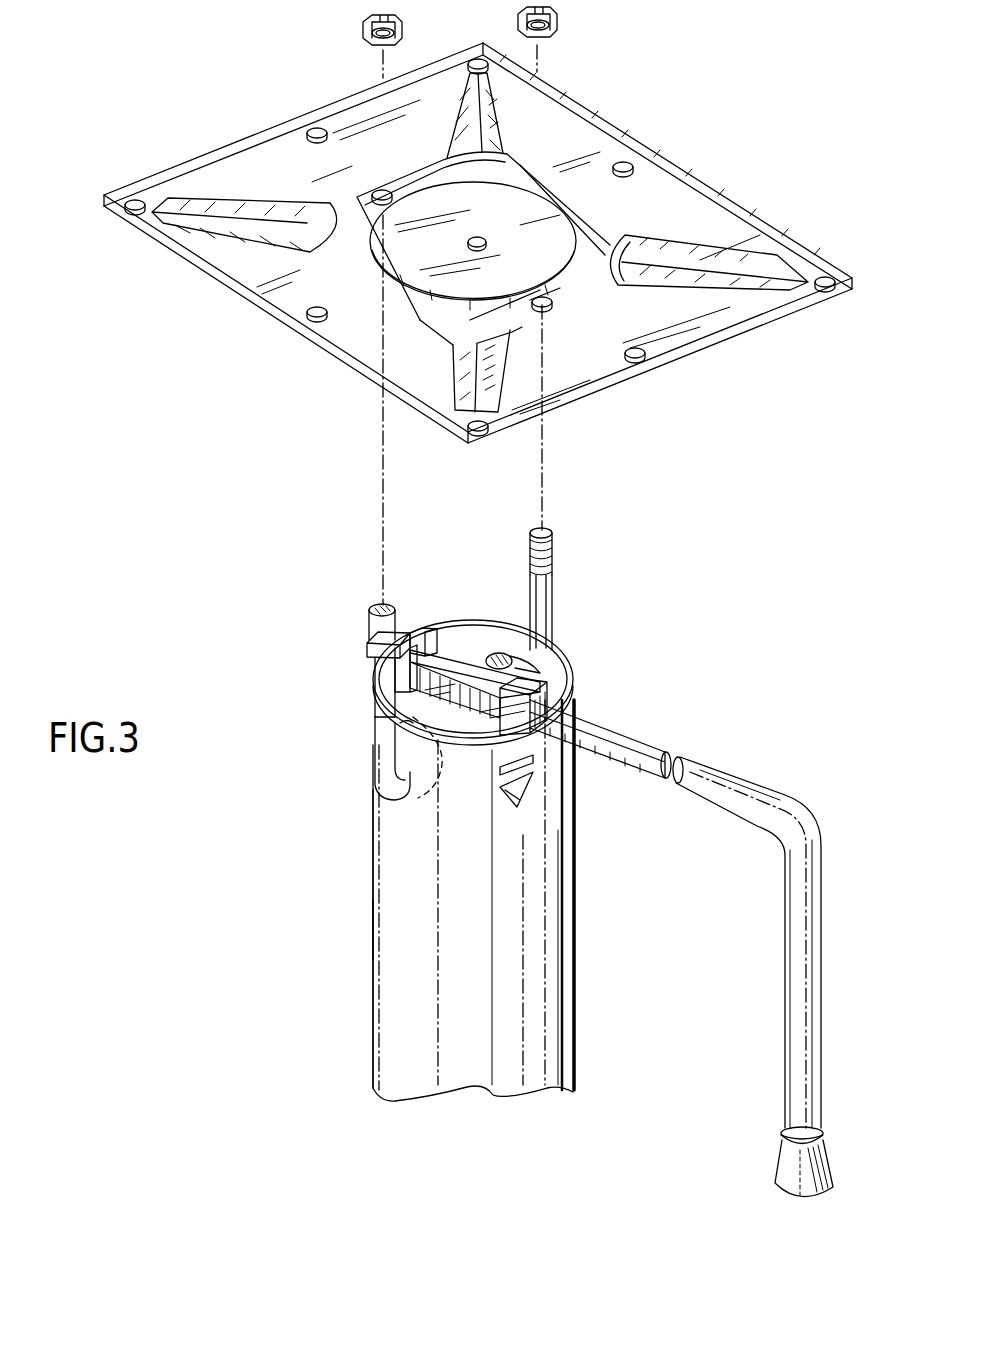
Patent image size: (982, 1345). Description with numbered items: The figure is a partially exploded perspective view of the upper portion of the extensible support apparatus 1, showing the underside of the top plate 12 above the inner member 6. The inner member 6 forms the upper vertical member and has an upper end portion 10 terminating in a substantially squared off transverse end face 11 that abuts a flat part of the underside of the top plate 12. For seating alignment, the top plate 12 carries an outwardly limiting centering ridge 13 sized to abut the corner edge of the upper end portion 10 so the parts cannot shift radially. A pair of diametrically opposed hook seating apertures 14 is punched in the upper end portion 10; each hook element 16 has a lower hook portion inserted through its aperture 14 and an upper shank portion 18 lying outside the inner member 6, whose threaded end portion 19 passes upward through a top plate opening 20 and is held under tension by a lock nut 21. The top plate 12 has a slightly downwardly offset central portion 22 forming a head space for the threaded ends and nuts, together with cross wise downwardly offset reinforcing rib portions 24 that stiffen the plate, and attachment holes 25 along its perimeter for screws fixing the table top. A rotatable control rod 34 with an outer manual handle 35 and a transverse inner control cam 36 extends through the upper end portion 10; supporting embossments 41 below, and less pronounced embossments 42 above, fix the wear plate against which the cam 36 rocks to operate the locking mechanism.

The extensible support apparatus 1 is at (340, 924).
The inner member 6 is at (372, 883).
The upper end portion 10 is at (430, 805).
The end face 11 is at (470, 626).
The top plate 12 is at (365, 360).
The centering ridge 13 is at (500, 298).
The hook seating aperture 14 is at (553, 660).
The hook element 16 is at (560, 588).
The shank portion 18 is at (548, 620).
The threaded end portion 19 is at (553, 545).
The top plate opening 20 is at (383, 190).
The lock nut 21 is at (402, 30).
The offset central portion 22 is at (605, 222).
The reinforcing rib portion 24 is at (262, 206).
The attachment hole 25 is at (140, 200).
The control rod 34 is at (730, 781).
The manual handle 35 is at (822, 962).
The control cam 36 is at (440, 640).
The supporting embossment 41 is at (520, 796).
The embossment 42 is at (505, 768).